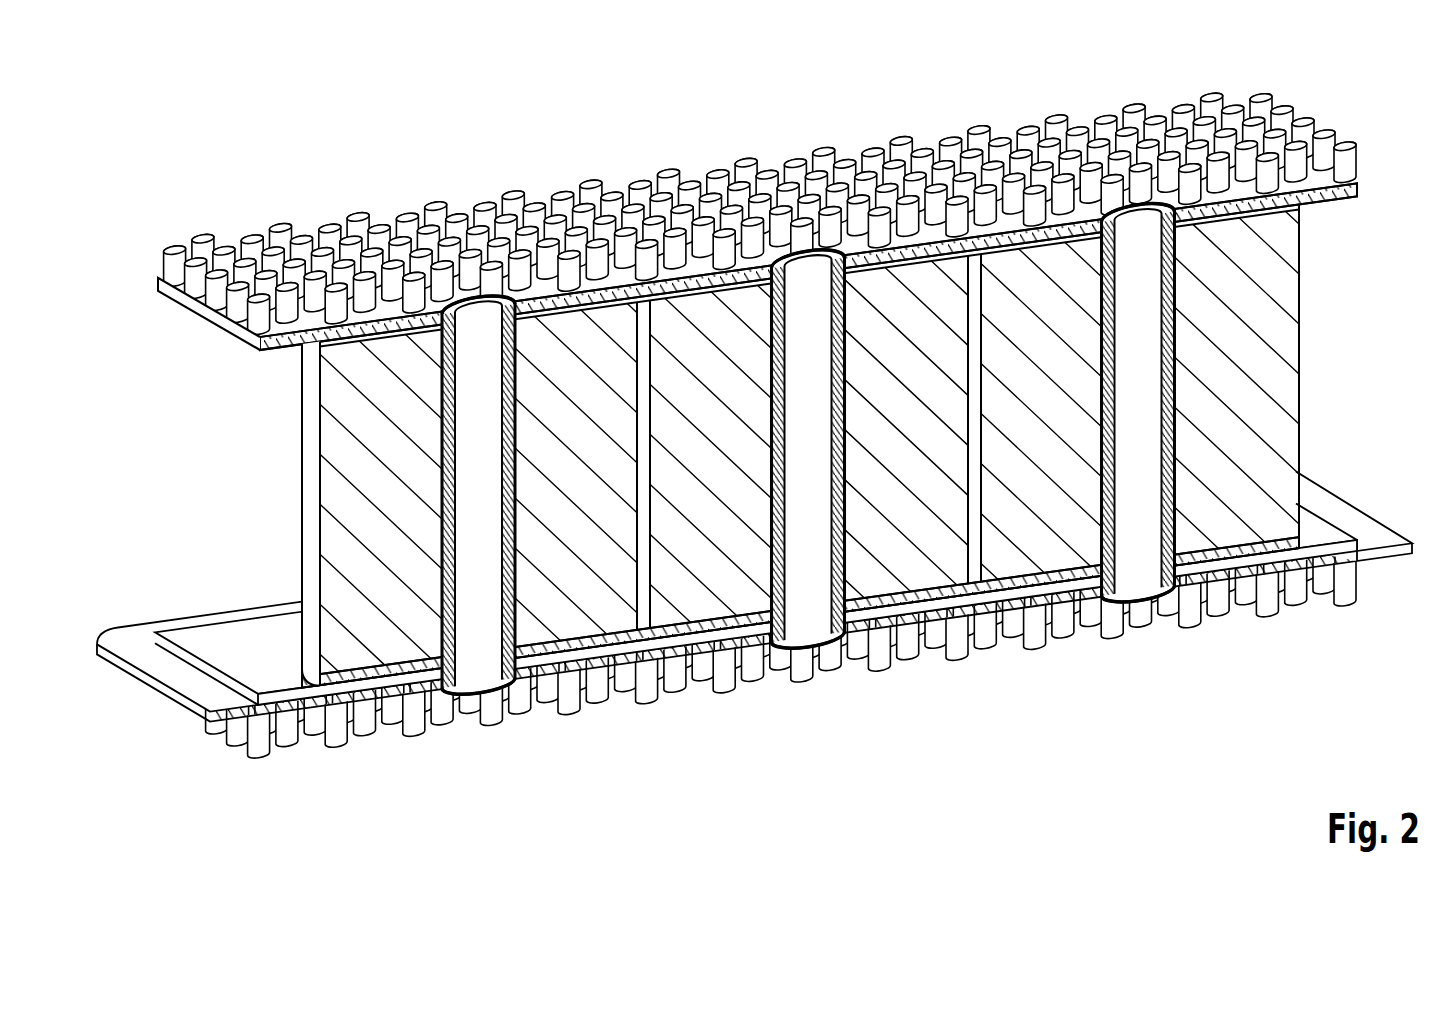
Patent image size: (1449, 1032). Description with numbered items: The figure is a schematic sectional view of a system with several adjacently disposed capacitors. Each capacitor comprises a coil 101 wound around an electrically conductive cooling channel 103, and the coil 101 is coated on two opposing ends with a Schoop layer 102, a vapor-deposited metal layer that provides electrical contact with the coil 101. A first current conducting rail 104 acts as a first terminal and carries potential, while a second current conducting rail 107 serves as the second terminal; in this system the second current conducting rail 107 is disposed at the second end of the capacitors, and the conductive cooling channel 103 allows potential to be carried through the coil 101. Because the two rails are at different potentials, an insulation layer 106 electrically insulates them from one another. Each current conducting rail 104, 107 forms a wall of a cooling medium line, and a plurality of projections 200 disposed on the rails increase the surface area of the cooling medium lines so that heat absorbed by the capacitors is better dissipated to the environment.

The projections 200 is at (766, 460).
The coil 101 is at (382, 643).
The Schoop layer 102 is at (1290, 214).
The cooling channel 103 is at (483, 660).
The first current conducting rail 104 is at (221, 637).
The insulation layer 106 is at (131, 643).
The second current conducting rail 107 is at (243, 324).